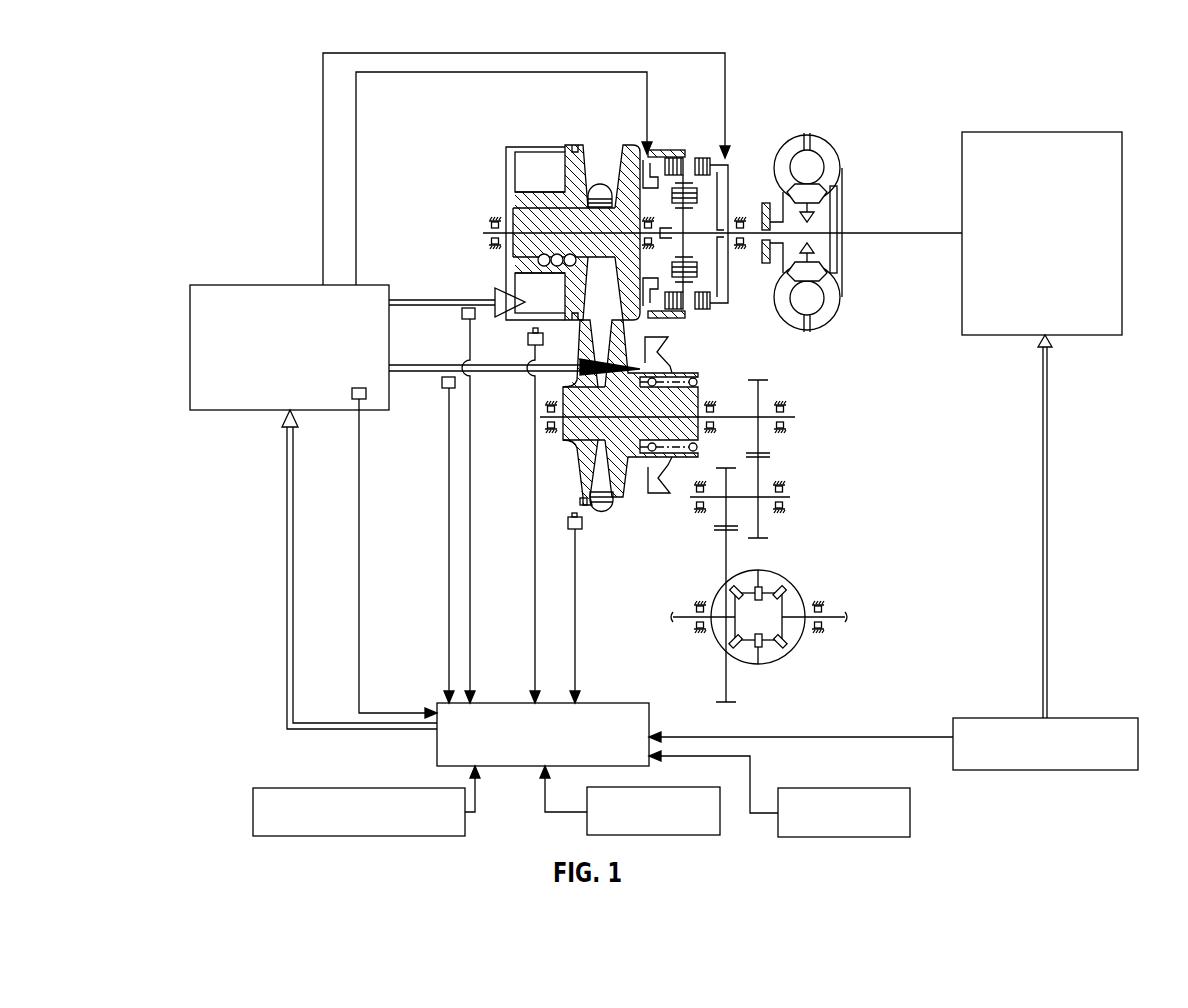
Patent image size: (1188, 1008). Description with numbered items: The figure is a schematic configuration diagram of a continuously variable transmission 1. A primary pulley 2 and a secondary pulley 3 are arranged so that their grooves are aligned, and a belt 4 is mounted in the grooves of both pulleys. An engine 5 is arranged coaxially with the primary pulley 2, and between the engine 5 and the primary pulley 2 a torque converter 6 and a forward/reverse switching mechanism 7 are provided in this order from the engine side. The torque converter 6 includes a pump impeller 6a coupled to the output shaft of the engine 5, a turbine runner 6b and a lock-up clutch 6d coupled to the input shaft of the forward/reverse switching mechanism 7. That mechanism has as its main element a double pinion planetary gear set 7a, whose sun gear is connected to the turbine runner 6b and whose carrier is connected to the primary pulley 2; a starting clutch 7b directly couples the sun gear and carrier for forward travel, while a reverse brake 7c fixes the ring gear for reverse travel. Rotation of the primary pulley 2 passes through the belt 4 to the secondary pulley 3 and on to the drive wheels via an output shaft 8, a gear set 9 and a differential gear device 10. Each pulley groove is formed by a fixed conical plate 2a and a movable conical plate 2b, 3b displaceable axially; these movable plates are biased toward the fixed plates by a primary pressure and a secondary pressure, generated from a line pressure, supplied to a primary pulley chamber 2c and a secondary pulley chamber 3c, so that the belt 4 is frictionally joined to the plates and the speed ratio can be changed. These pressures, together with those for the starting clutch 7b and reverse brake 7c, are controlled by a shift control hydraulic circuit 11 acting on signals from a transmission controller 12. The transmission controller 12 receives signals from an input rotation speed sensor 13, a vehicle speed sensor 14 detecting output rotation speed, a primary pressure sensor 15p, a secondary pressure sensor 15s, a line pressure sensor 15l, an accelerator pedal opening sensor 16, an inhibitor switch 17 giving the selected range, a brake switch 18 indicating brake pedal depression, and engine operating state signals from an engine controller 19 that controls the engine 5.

The continuously variable transmission 1 is at (700, 373).
The primary pulley 2 is at (546, 199).
The fixed conical plate 2a is at (631, 143).
The movable conical plate 2b is at (576, 143).
The primary pulley chamber 2c is at (528, 174).
The secondary pulley 3 is at (667, 450).
The movable conical plate 3b is at (620, 508).
The secondary pulley chamber 3c is at (635, 495).
The belt 4 is at (600, 187).
The engine 5 is at (1043, 132).
The torque converter 6 is at (816, 188).
The pump impeller 6a is at (772, 152).
The turbine runner 6b is at (842, 300).
The lock-up clutch 6d is at (845, 205).
The forward/reverse switching mechanism 7 is at (685, 187).
The double pinion planetary gear set 7a is at (691, 158).
The starting clutch 7b is at (704, 158).
The reverse brake 7c is at (673, 157).
The output shaft 8 is at (738, 415).
The gear set 9 is at (812, 442).
The differential gear device 10 is at (812, 565).
The shift control hydraulic circuit 11 is at (265, 285).
The transmission controller 12 is at (437, 752).
The input rotation speed sensor 13 is at (528, 339).
The vehicle speed sensor 14 is at (578, 532).
The primary pressure sensor 15p is at (460, 316).
The secondary pressure sensor 15s is at (443, 388).
The line pressure sensor 15l is at (353, 396).
The accelerator pedal opening sensor 16 is at (253, 812).
The inhibitor switch 17 is at (670, 787).
The brake switch 18 is at (912, 813).
The engine controller 19 is at (1087, 718).